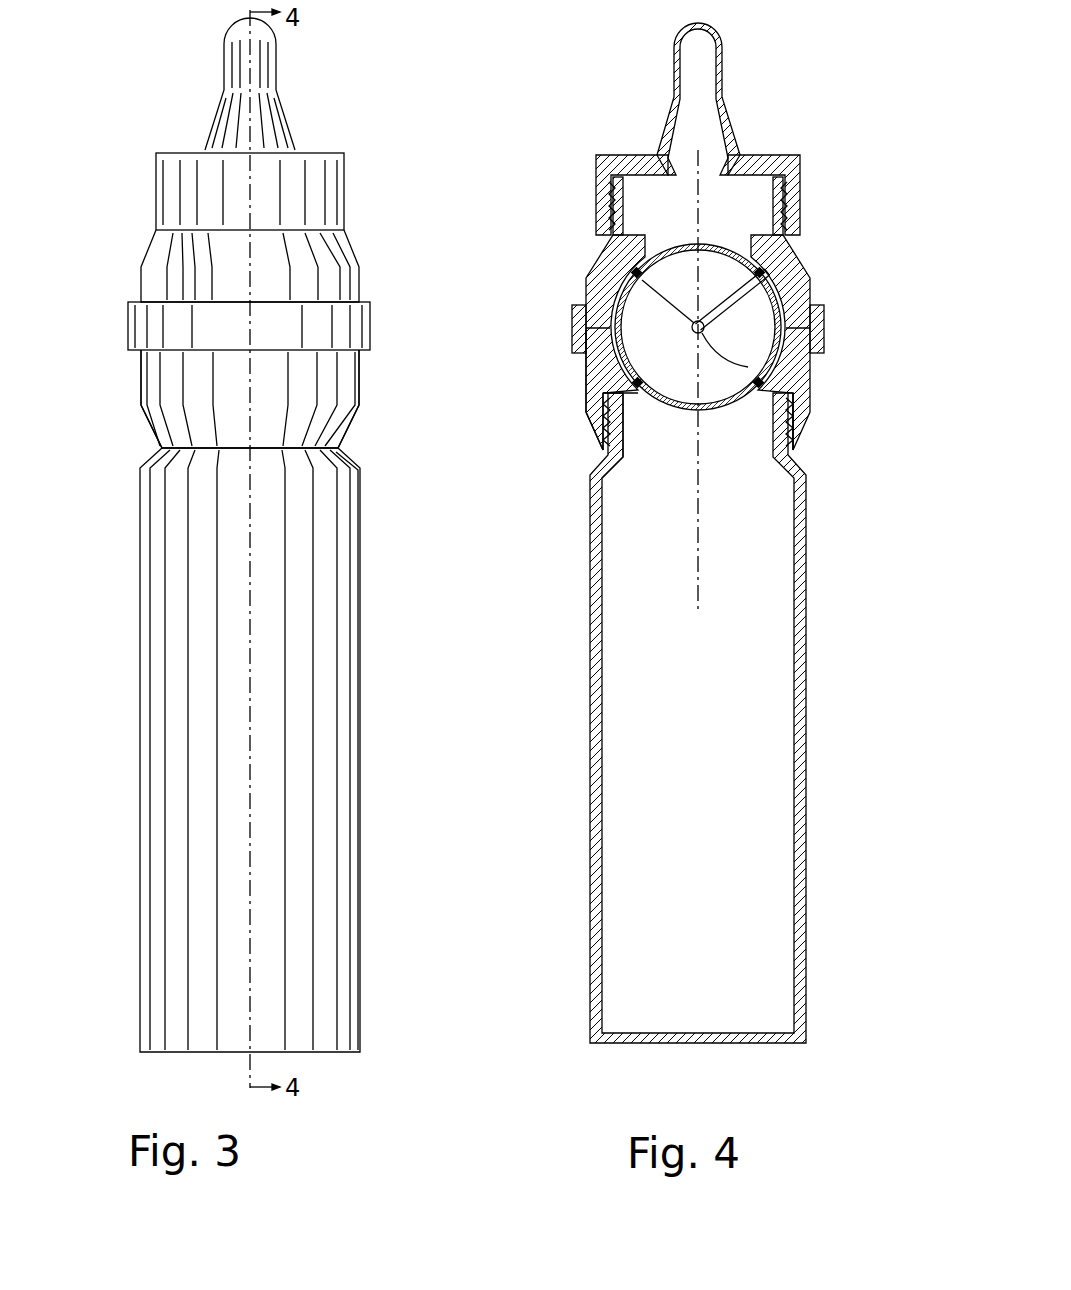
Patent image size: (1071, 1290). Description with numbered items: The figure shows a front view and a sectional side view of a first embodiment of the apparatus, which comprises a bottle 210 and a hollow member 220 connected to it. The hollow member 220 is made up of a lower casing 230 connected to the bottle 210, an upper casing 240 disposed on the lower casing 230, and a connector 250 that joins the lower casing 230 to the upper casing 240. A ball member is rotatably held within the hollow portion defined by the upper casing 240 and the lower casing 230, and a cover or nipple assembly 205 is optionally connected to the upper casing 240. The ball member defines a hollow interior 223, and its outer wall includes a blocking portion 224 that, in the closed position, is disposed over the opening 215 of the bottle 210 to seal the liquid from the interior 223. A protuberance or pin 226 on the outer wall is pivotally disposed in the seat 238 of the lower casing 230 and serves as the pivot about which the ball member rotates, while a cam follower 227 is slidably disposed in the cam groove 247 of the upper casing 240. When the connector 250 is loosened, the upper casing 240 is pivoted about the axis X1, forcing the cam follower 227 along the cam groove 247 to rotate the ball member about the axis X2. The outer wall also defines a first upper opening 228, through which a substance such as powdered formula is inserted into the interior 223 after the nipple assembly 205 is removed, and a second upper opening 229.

In FIG. 3, the cover or nipple assembly 205 is at (308, 154).
In FIG. 4, the cover or nipple assembly 205 is at (783, 156).
In FIG. 3, the bottle 210 is at (313, 704).
In FIG. 4, the bottle 210 is at (735, 710).
In FIG. 4, the opening of the bottle 215 is at (637, 453).
In FIG. 3, the hollow member 220 is at (428, 317).
In FIG. 4, the hollow interior 223 is at (603, 392).
In FIG. 4, the blocking portion 224 is at (722, 410).
In FIG. 4, the protuberance or pin 226 is at (802, 425).
In FIG. 4, the cam follower 227 is at (748, 367).
In FIG. 4, the first upper opening 228 is at (735, 252).
In FIG. 4, the second upper opening 229 is at (648, 353).
In FIG. 3, the lower casing 230 is at (328, 371).
In FIG. 4, the lower casing 230 is at (812, 392).
In FIG. 4, the seat 238 is at (606, 422).
In FIG. 3, the upper casing 240 is at (333, 273).
In FIG. 4, the upper casing 240 is at (796, 280).
In FIG. 4, the cam groove 247 is at (804, 298).
In FIG. 3, the means for connecting / connector 250 is at (128, 313).
In FIG. 4, the means for connecting / connector 250 is at (570, 316).
In FIG. 4, the axis X1 is at (697, 187).
In FIG. 4, the axis X2 is at (612, 255).